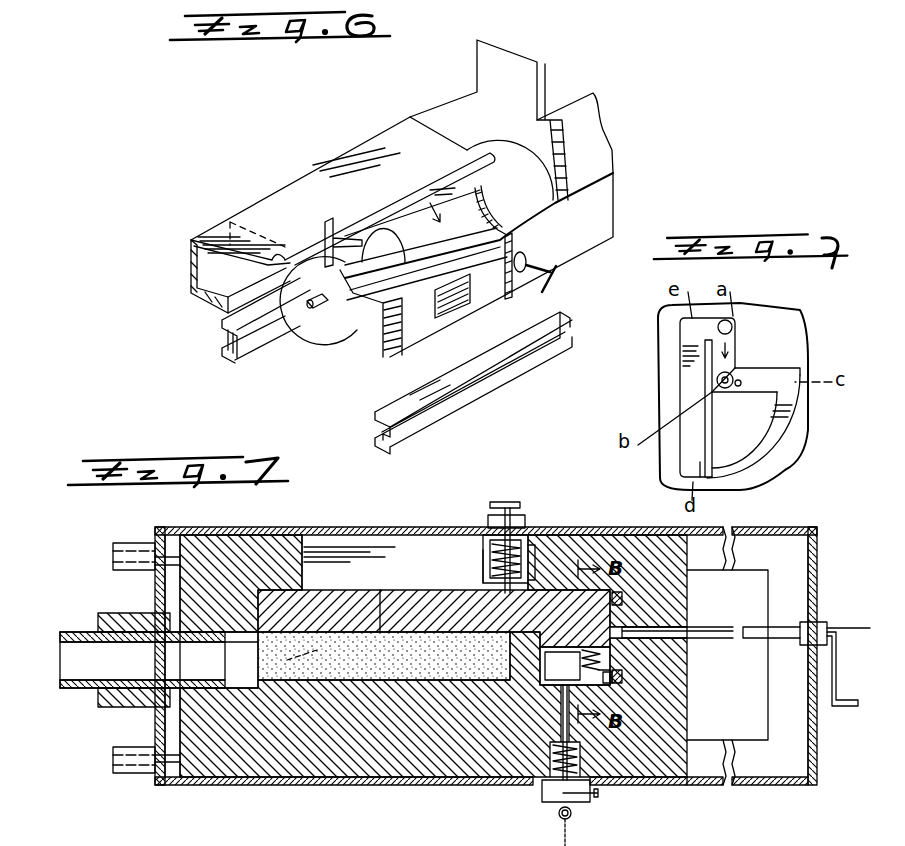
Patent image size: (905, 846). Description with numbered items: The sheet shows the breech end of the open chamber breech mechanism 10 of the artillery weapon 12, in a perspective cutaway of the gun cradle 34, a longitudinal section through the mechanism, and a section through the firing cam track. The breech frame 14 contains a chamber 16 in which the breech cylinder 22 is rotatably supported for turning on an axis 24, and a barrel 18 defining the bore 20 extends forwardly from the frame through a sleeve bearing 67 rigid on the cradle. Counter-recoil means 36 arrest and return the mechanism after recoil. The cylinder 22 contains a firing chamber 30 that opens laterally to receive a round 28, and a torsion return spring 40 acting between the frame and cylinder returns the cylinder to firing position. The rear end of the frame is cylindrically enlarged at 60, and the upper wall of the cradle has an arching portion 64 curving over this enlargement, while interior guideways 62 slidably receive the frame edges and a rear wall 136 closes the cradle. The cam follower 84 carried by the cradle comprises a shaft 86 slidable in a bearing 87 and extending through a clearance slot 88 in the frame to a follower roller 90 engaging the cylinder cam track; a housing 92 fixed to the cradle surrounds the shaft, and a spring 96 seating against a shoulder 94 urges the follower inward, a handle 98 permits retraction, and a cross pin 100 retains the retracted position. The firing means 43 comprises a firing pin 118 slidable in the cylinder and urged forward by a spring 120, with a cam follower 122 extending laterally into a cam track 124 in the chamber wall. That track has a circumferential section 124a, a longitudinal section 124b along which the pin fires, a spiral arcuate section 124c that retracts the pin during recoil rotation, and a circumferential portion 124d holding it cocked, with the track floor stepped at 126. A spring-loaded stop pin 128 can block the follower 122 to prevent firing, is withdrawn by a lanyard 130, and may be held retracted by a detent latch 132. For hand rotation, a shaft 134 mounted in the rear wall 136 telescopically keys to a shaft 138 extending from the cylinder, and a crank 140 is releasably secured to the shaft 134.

In FIG. 7, the breech mechanism 10 is at (354, 519).
In FIG. 7, the weapon 12 is at (170, 522).
In FIG. 7, the breech frame 14 is at (256, 540).
In FIG. 7, the chamber 16 is at (290, 683).
In FIG. 7, the barrel 18 is at (80, 690).
In FIG. 7, the bore 20 is at (78, 644).
In FIG. 7, the breech cylinder 22 is at (360, 584).
In FIG. 7, the axis 24 is at (866, 636).
In FIG. 7, the round 28 is at (425, 683).
In FIG. 7, the firing chamber 30 is at (410, 640).
In FIG. 7, the cradle 34 is at (826, 576).
In FIG. 7, the counter-recoil means 36 is at (138, 543).
In FIG. 7, the return spring 40 is at (622, 598).
In FIG. 9, the firing means 43 is at (647, 424).
In FIG. 6, the frame enlargement 60 is at (340, 342).
In FIG. 7, the guideways 62 is at (705, 775).
In FIG. 6, the arching portion 64 is at (505, 148).
In FIG. 7, the sleeve bearing 67 is at (108, 708).
In FIG. 7, the cam follower 84 is at (538, 570).
In FIG. 7, the shaft 86 is at (520, 517).
In FIG. 7, the bearing 87 is at (484, 540).
In FIG. 6, the clearance slot 88 is at (457, 300).
In FIG. 7, the clearance slot 88 is at (312, 548).
In FIG. 7, the follower roller 90 is at (548, 585).
In FIG. 7, the housing 92 is at (470, 533).
In FIG. 7, the shoulder 94 is at (490, 572).
In FIG. 7, the spring 96 is at (530, 548).
In FIG. 7, the handle 98 is at (507, 500).
In FIG. 7, the cross pin 100 is at (490, 503).
In FIG. 7, the firing pin 118 is at (556, 647).
In FIG. 7, the spring 120 is at (612, 676).
In FIG. 9, the cam follower 122 is at (745, 318).
In FIG. 7, the cam follower 122 is at (548, 683).
In FIG. 9, the cam track 124 is at (693, 352).
In FIG. 9, the circumferential cam track section 124a is at (735, 352).
In FIG. 9, the longitudinal cam track section 124b is at (763, 372).
In FIG. 9, the arcuate cam track section 124c is at (765, 450).
In FIG. 9, the circumferential cam track portion 124d is at (690, 383).
In FIG. 9, the step 126 is at (690, 465).
In FIG. 9, the stop pin 128 is at (770, 440).
In FIG. 7, the stop pin 128 is at (560, 726).
In FIG. 7, the lanyard 130 is at (587, 826).
In FIG. 7, the detent latch 132 is at (598, 800).
In FIG. 7, the shaft 134 is at (782, 630).
In FIG. 7, the rear wall 136 is at (818, 752).
In FIG. 7, the shaft 138 is at (703, 627).
In FIG. 7, the crank 140 is at (838, 676).